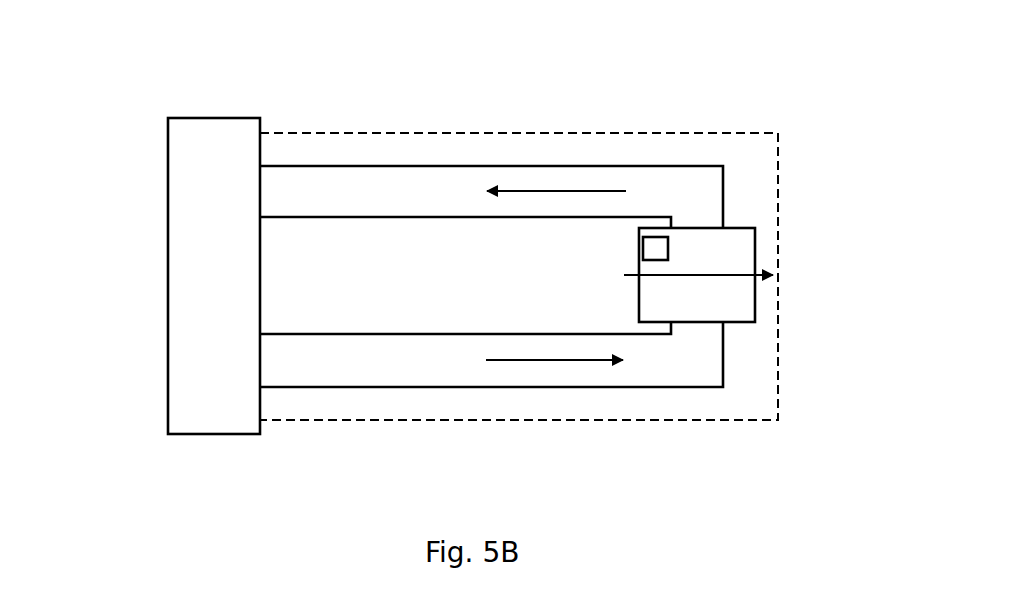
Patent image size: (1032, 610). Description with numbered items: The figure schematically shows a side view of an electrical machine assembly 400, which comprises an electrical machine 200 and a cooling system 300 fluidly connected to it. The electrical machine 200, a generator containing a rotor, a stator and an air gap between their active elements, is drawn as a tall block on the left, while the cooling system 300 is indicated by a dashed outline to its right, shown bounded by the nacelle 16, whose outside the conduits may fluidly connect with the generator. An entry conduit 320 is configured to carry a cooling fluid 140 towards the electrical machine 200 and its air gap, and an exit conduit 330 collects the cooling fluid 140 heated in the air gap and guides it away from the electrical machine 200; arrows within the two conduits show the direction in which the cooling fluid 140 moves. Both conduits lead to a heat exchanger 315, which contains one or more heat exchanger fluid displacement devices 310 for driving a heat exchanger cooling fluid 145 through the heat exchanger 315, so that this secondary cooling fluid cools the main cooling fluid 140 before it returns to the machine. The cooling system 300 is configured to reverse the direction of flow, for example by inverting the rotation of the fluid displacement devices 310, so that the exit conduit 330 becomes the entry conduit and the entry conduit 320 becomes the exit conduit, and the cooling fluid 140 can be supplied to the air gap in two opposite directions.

The nacelle 16 is at (397, 135).
The cooling fluid 140 is at (536, 191).
The heat exchanger cooling fluid 145 is at (730, 278).
The electrical machine 200 is at (192, 289).
The cooling system 300 is at (722, 150).
The cooling fluid propulsor 310 is at (650, 247).
The heat exchanger 315 is at (735, 250).
The entry conduit 320 is at (278, 190).
The exit conduit 330 is at (333, 362).
The electrical machine assembly 400 is at (482, 105).